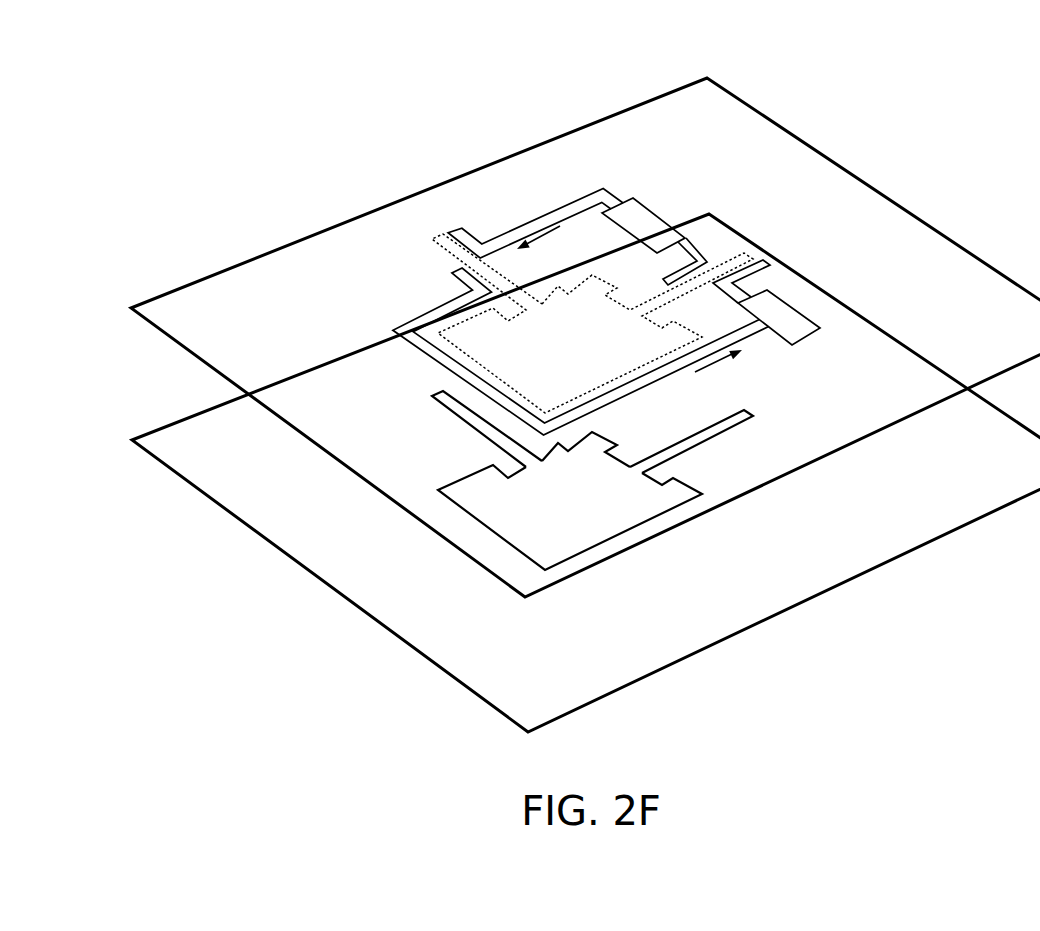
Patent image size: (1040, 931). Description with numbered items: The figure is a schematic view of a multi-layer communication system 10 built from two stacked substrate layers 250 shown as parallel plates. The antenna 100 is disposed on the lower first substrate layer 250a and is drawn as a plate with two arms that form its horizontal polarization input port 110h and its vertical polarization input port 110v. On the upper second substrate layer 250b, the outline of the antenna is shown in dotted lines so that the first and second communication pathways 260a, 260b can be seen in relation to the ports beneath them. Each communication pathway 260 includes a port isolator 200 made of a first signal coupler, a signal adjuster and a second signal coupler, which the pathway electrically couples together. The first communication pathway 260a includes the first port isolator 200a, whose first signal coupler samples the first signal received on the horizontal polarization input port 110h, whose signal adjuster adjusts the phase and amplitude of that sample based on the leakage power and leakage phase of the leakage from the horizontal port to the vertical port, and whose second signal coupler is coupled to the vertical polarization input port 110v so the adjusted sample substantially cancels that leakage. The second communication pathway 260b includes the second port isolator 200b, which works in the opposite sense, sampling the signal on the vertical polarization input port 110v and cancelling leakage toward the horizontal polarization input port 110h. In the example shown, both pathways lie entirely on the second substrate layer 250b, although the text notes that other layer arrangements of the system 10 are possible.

The system 10 is at (557, 395).
The antenna 100 is at (582, 509).
The horizontal polarization input port 110h is at (462, 425).
The vertical polarization input port 110v is at (751, 418).
The port isolator 200 is at (627, 287).
The first port isolator 200a is at (627, 334).
The second port isolator 200b is at (617, 212).
The substrate layer 250 is at (557, 405).
The first substrate layer 250a is at (192, 483).
The second substrate layer 250b is at (178, 345).
The communication pathway 260 is at (629, 292).
The first communication pathway 260a is at (716, 377).
The second communication pathway 260b is at (564, 200).